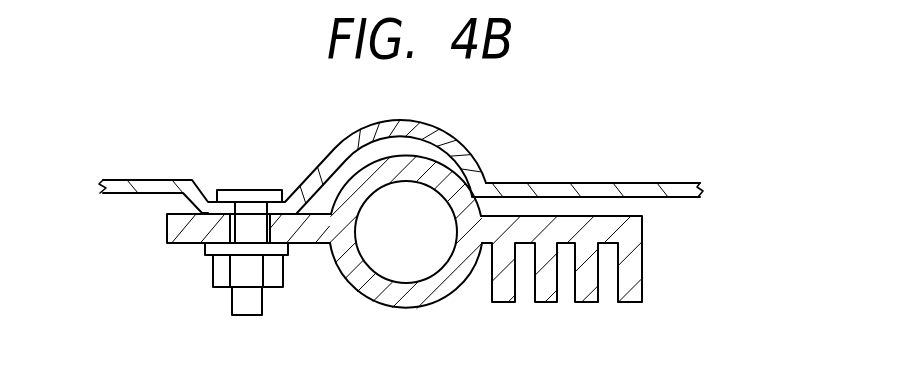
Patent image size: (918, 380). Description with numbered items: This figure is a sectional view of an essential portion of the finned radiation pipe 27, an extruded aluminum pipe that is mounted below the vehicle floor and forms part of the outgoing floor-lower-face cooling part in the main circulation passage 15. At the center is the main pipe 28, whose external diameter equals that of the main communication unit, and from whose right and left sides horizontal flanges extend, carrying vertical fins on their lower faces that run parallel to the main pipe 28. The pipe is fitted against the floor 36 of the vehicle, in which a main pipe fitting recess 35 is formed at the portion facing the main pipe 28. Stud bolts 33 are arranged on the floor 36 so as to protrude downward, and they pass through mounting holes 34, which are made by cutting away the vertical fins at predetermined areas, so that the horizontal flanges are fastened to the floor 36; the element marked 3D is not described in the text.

The finned radiation pipe 27 is at (693, 222).
The main pipe fitting recess 35 is at (338, 151).
The floor 36 is at (663, 185).
The main pipe 28 is at (455, 188).
The main circulation passage 15 is at (415, 248).
The heat sink with fins 3D is at (633, 283).
The stud bolt 33 is at (225, 190).
The mounting hole 34 is at (225, 261).